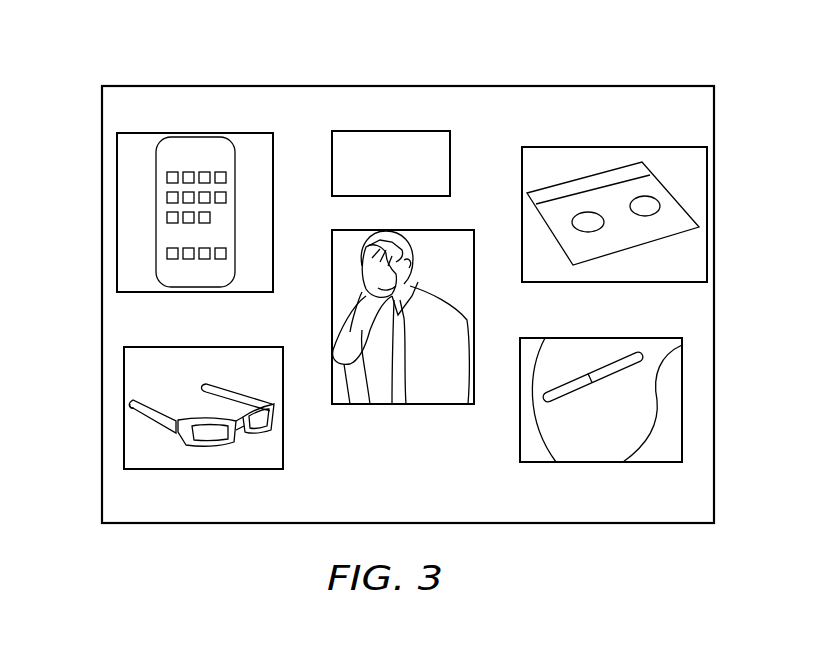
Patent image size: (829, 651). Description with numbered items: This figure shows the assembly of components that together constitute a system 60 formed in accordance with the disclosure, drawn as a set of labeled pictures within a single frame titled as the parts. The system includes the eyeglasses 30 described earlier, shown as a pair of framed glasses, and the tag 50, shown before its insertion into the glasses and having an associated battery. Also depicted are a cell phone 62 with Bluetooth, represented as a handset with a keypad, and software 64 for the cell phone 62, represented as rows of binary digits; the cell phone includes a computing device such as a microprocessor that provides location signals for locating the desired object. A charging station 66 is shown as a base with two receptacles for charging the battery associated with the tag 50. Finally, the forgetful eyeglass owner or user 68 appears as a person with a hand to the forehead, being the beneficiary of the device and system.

The system 60 is at (195, 60).
The cell phone 62 is at (155, 212).
The software 64 is at (442, 151).
The charging station 66 is at (677, 190).
The user 68 is at (433, 280).
The tag 50 is at (627, 385).
The eyeglasses 30 is at (203, 408).